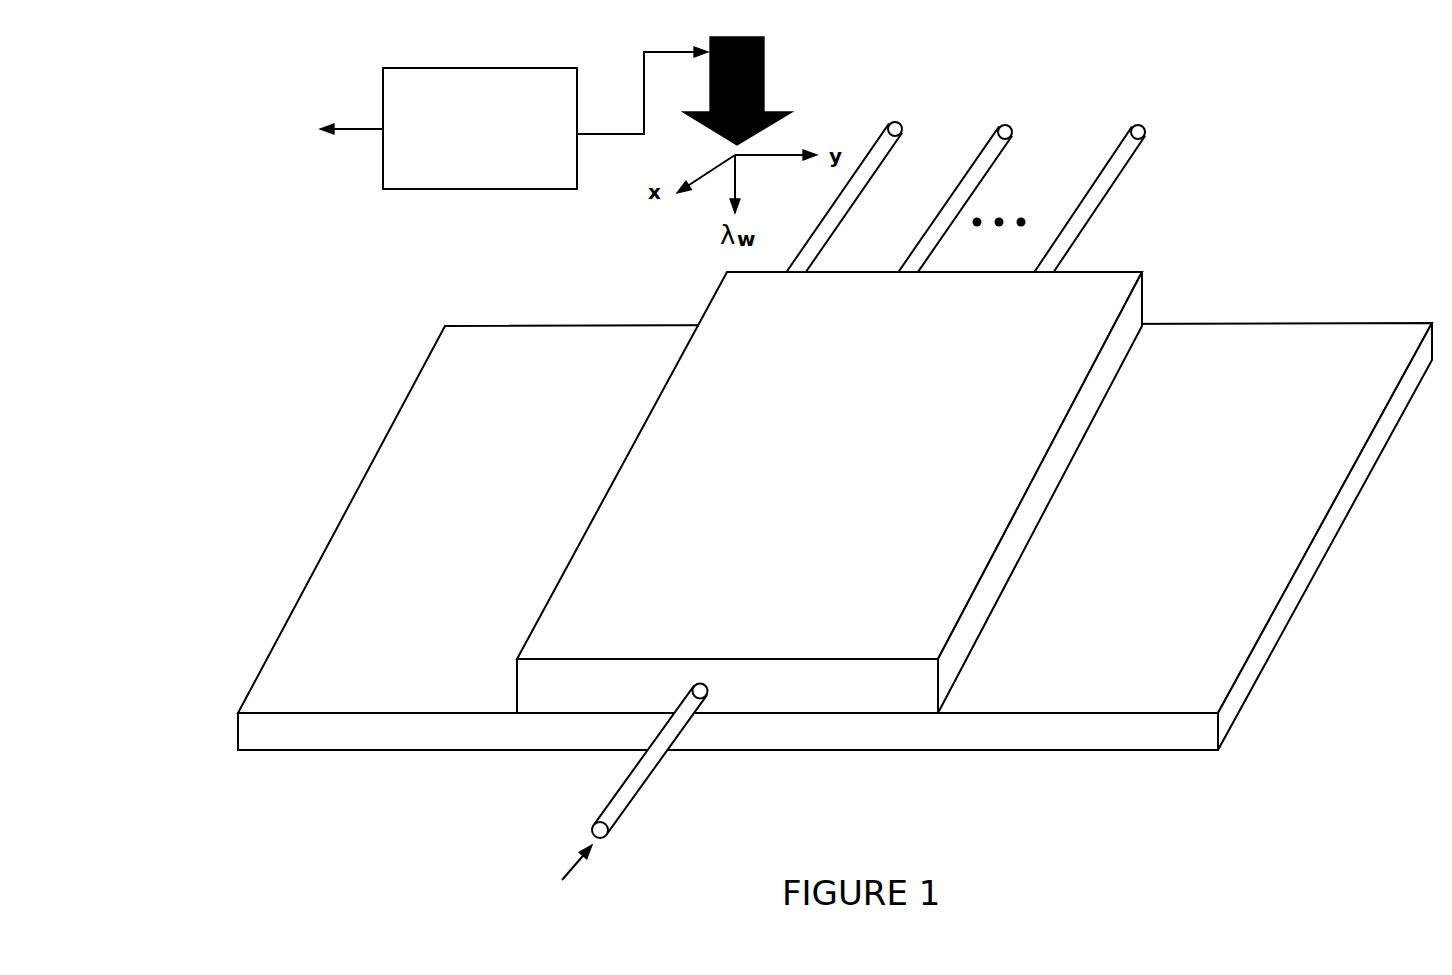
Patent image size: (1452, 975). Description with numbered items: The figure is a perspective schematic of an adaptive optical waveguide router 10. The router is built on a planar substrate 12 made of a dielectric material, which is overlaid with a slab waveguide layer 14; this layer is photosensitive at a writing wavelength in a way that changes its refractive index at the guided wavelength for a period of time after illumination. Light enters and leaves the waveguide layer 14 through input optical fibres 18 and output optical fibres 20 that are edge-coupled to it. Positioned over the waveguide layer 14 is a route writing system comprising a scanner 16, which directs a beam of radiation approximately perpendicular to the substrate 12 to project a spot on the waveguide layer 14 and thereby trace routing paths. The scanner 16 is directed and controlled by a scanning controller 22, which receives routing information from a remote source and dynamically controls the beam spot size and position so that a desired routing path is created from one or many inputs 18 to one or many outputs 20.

The adaptive optical waveguide router 10 is at (1070, 799).
The planar substrate 12 is at (1322, 542).
The slab waveguide layer 14 is at (1043, 482).
The scanner 16 is at (765, 90).
The input optical fibres 18 is at (645, 783).
The output optical fibres 20 is at (900, 123).
The scanning controller 22 is at (475, 68).